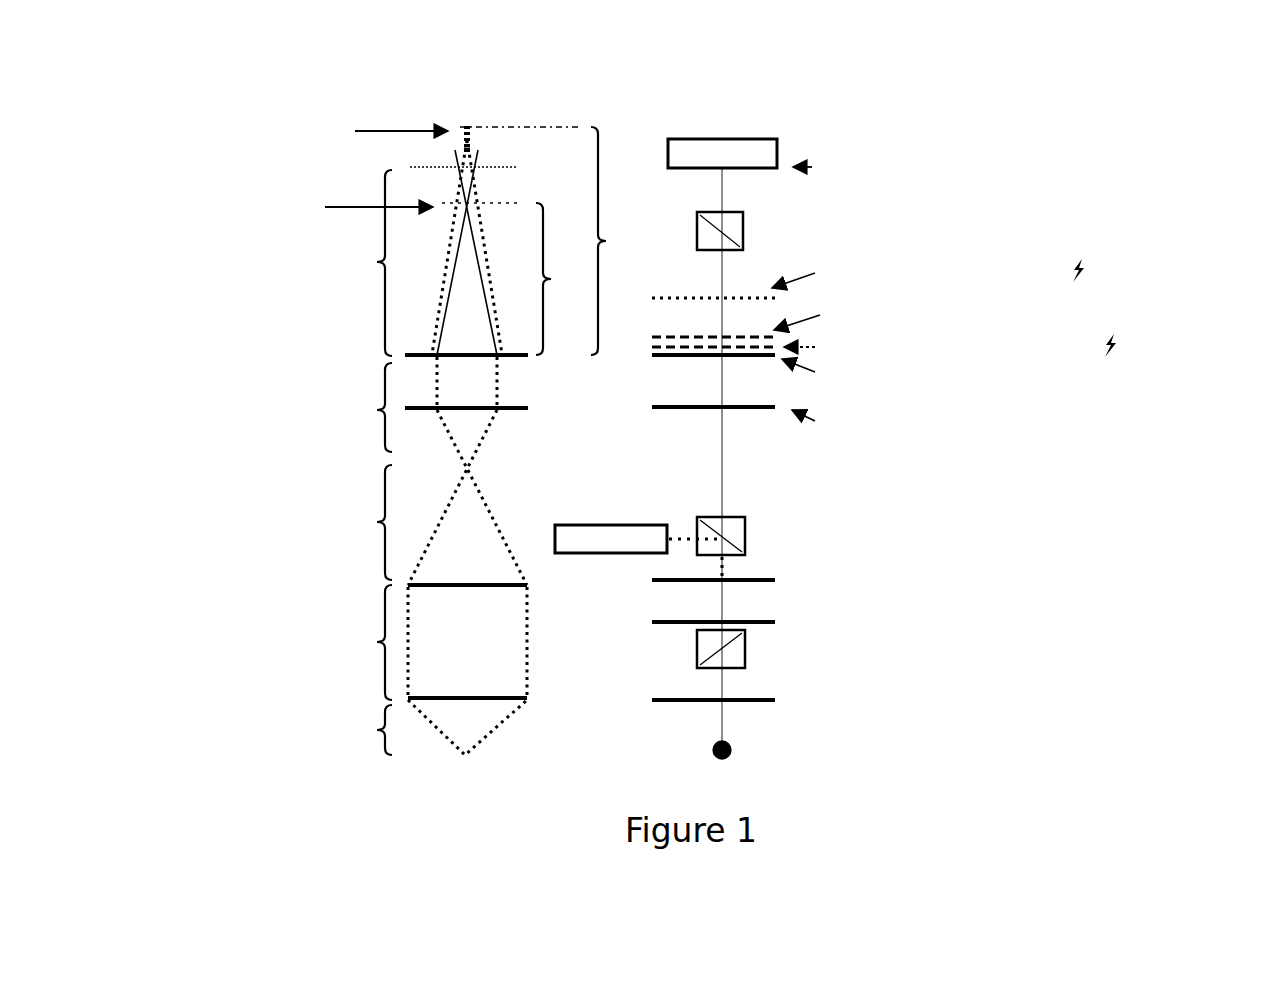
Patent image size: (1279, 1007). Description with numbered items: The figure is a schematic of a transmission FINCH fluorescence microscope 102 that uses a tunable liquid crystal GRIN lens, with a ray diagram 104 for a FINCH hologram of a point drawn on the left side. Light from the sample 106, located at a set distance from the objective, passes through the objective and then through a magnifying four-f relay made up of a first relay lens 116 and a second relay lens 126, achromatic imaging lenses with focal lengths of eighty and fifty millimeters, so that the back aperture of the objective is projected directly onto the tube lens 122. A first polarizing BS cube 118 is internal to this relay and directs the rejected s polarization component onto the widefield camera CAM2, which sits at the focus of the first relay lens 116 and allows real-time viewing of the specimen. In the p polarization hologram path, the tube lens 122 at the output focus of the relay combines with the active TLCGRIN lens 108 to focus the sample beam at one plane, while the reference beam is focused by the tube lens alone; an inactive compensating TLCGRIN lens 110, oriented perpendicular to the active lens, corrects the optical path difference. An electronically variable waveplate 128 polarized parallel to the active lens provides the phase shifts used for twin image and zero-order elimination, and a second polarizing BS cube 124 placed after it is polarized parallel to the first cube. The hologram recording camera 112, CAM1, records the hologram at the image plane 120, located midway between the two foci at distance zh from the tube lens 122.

The FINCH fluorescence microscope 102 is at (926, 108).
The ray diagram 104 is at (514, 108).
The sample 106 is at (714, 757).
The active TLCGRIN lens 108 is at (909, 345).
The inactive compensating TLCGRIN lens 110 is at (922, 315).
The hologram recording camera 112 is at (733, 137).
The first relay lens 116 is at (610, 522).
The first polarizing BS cube 118 is at (904, 536).
The image plane 120 is at (934, 168).
The tube lens 122 is at (875, 372).
The second polarizing BS cube 124 is at (906, 231).
The second relay lens 126 is at (860, 422).
The waveplate 128 is at (891, 278).